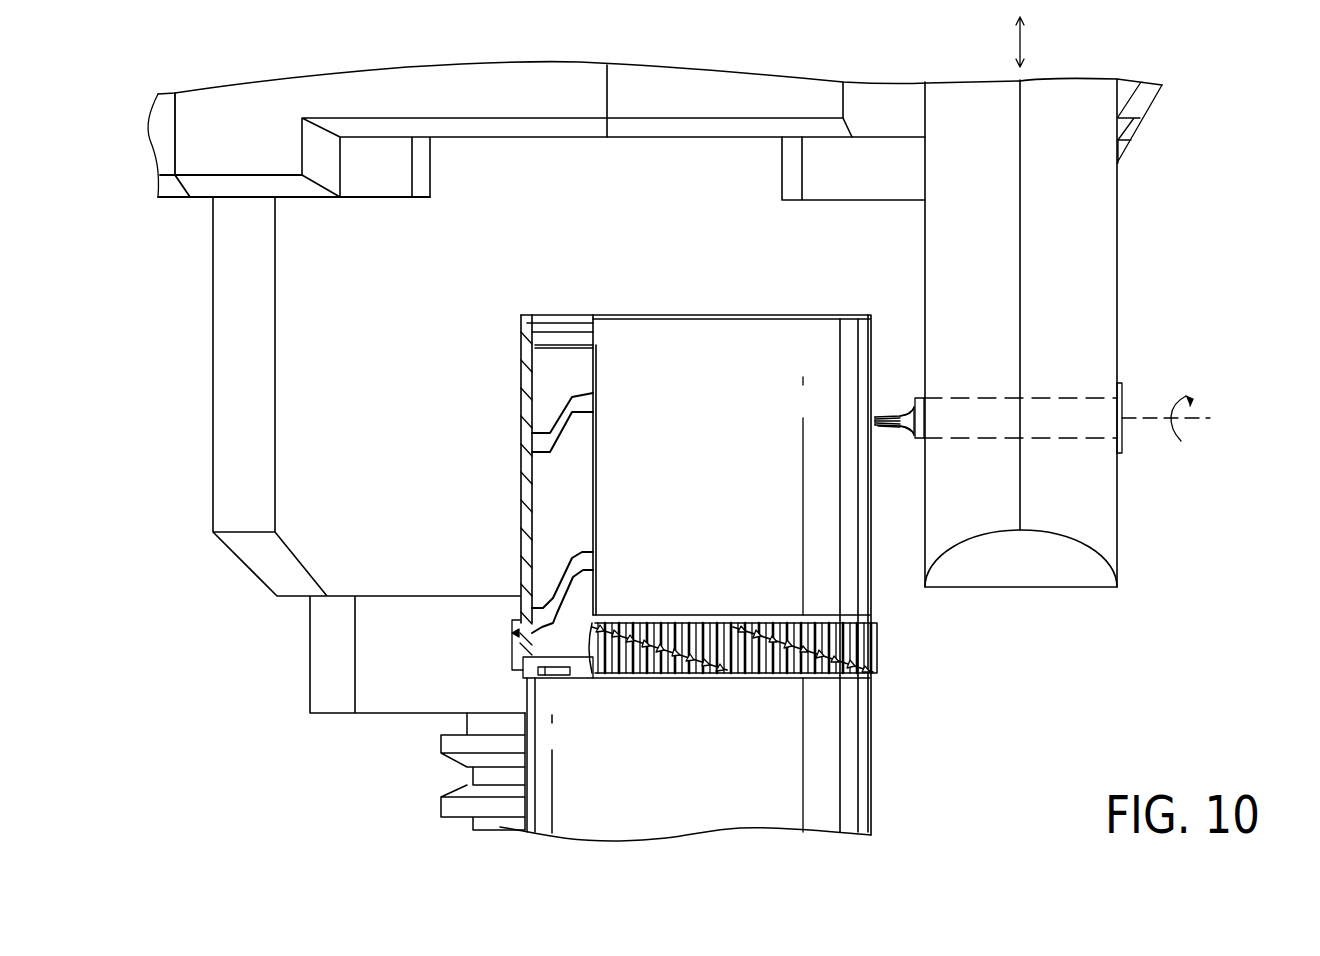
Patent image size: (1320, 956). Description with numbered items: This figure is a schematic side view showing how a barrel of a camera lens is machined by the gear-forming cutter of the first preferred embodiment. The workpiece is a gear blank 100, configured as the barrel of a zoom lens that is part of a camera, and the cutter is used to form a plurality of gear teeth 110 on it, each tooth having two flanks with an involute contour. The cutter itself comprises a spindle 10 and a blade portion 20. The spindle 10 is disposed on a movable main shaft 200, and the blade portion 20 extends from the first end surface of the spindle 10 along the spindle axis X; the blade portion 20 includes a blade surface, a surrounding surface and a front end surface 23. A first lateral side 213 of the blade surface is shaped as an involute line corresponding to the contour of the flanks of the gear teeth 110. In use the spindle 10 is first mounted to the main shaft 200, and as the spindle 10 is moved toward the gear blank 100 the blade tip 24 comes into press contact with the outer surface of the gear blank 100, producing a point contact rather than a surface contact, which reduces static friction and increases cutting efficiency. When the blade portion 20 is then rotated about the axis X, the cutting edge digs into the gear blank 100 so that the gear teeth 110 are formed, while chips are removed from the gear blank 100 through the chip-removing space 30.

The spindle 10 is at (1062, 438).
The blade portion 20 is at (888, 462).
The front end surface 23 is at (873, 417).
The blade tip 24 is at (875, 413).
The chip-removing space 30 is at (901, 412).
The gear blank 100 is at (705, 578).
The gear teeth 110 is at (877, 668).
The main shaft 200 is at (1118, 237).
The first lateral side 213 is at (885, 428).